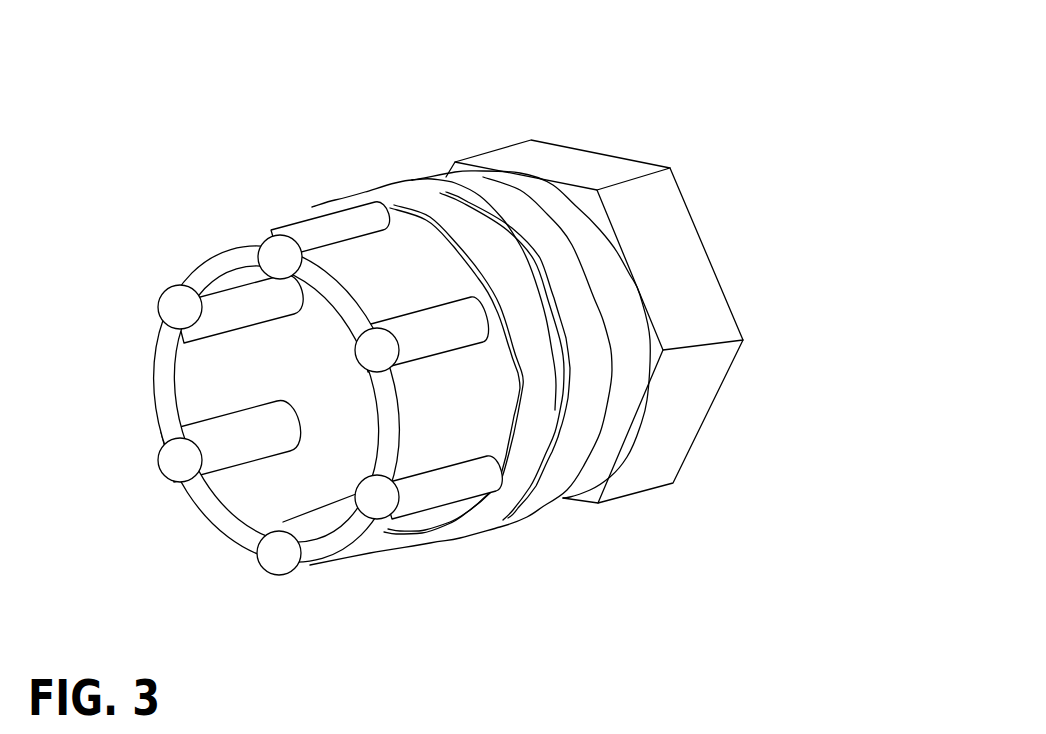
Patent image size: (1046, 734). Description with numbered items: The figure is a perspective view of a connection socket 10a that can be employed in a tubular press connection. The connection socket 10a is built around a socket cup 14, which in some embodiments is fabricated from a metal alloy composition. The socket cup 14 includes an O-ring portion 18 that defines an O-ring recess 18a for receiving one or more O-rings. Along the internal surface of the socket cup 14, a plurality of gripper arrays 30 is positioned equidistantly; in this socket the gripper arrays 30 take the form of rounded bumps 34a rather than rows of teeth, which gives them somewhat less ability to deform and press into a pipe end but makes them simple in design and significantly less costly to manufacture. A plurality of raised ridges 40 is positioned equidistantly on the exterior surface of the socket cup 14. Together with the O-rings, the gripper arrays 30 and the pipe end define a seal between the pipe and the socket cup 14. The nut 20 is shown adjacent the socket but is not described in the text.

The connection socket 10a is at (422, 349).
The socket cup 14 is at (210, 255).
The O-ring portion 18 is at (480, 353).
The O-ring recess 18a is at (494, 500).
The hex nut 20 is at (688, 217).
The gripper arrays 30 is at (240, 463).
The rounded bumps 34a is at (233, 428).
The raised ridges 40 is at (417, 498).